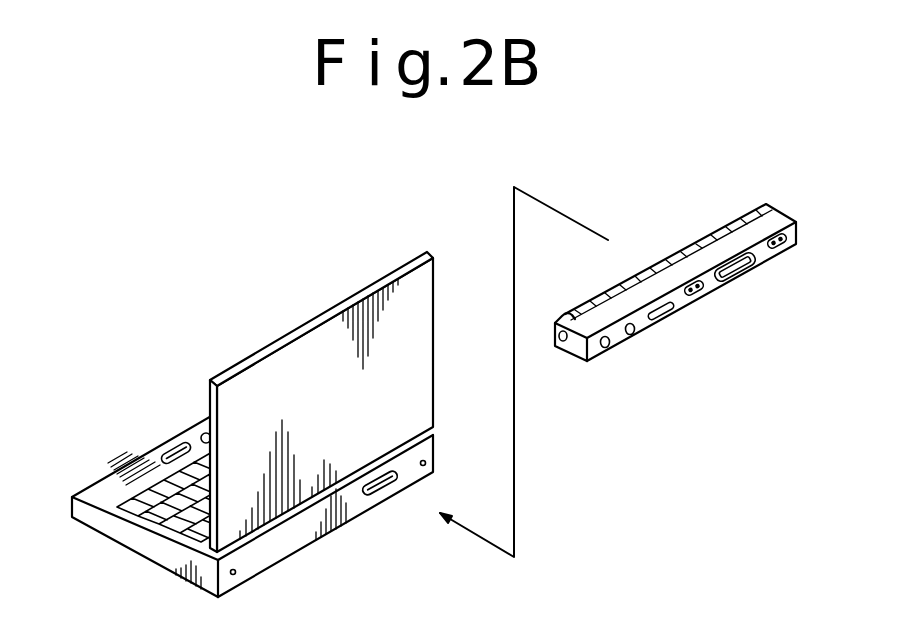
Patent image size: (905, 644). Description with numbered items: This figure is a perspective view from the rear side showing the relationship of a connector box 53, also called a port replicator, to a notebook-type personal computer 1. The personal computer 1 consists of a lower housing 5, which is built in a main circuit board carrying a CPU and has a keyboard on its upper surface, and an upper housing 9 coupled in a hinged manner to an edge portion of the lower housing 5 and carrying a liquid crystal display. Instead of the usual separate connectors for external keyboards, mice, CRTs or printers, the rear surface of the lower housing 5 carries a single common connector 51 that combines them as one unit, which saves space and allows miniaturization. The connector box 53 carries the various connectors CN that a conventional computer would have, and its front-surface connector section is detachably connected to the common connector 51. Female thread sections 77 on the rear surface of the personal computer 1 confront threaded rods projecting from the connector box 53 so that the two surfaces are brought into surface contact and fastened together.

The personal computer 1 is at (163, 333).
The lower housing 5 is at (113, 530).
The upper housing 9 is at (430, 296).
The common connector 51 is at (382, 492).
The female thread sections 77 is at (426, 463).
The connector box 53 is at (700, 233).
The connectors CN is at (608, 347).